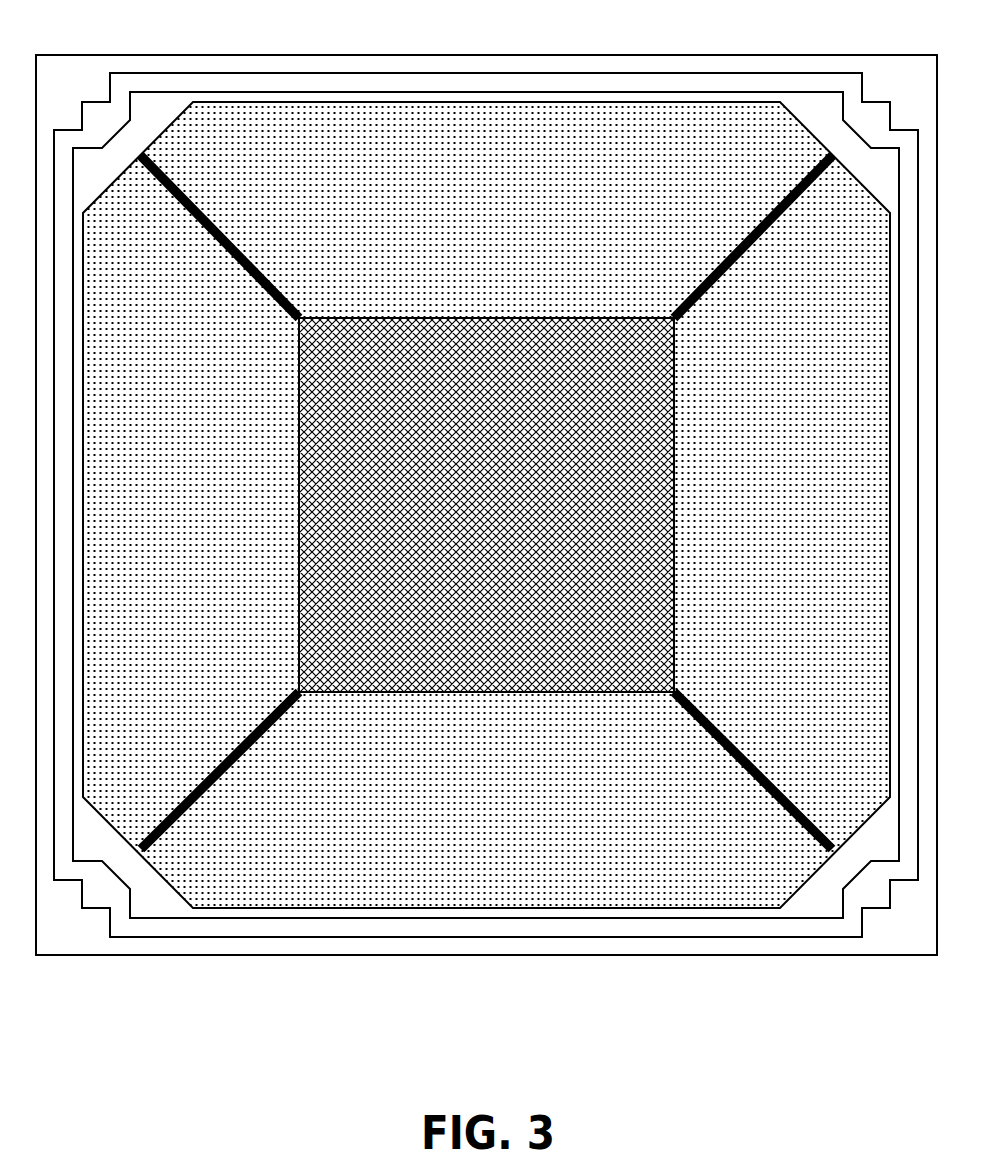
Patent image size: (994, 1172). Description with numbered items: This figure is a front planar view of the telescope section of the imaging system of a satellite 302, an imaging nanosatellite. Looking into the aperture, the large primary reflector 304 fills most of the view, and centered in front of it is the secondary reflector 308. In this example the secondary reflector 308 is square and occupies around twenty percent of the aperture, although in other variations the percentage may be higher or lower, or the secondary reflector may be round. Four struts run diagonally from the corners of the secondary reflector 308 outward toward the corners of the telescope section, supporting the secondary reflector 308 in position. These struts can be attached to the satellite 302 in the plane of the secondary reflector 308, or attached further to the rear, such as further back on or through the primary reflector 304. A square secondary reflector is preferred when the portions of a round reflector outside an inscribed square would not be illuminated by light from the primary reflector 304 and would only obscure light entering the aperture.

The satellite 302 is at (488, 55).
The primary reflector 304 is at (637, 194).
The secondary reflector 308 is at (464, 317).